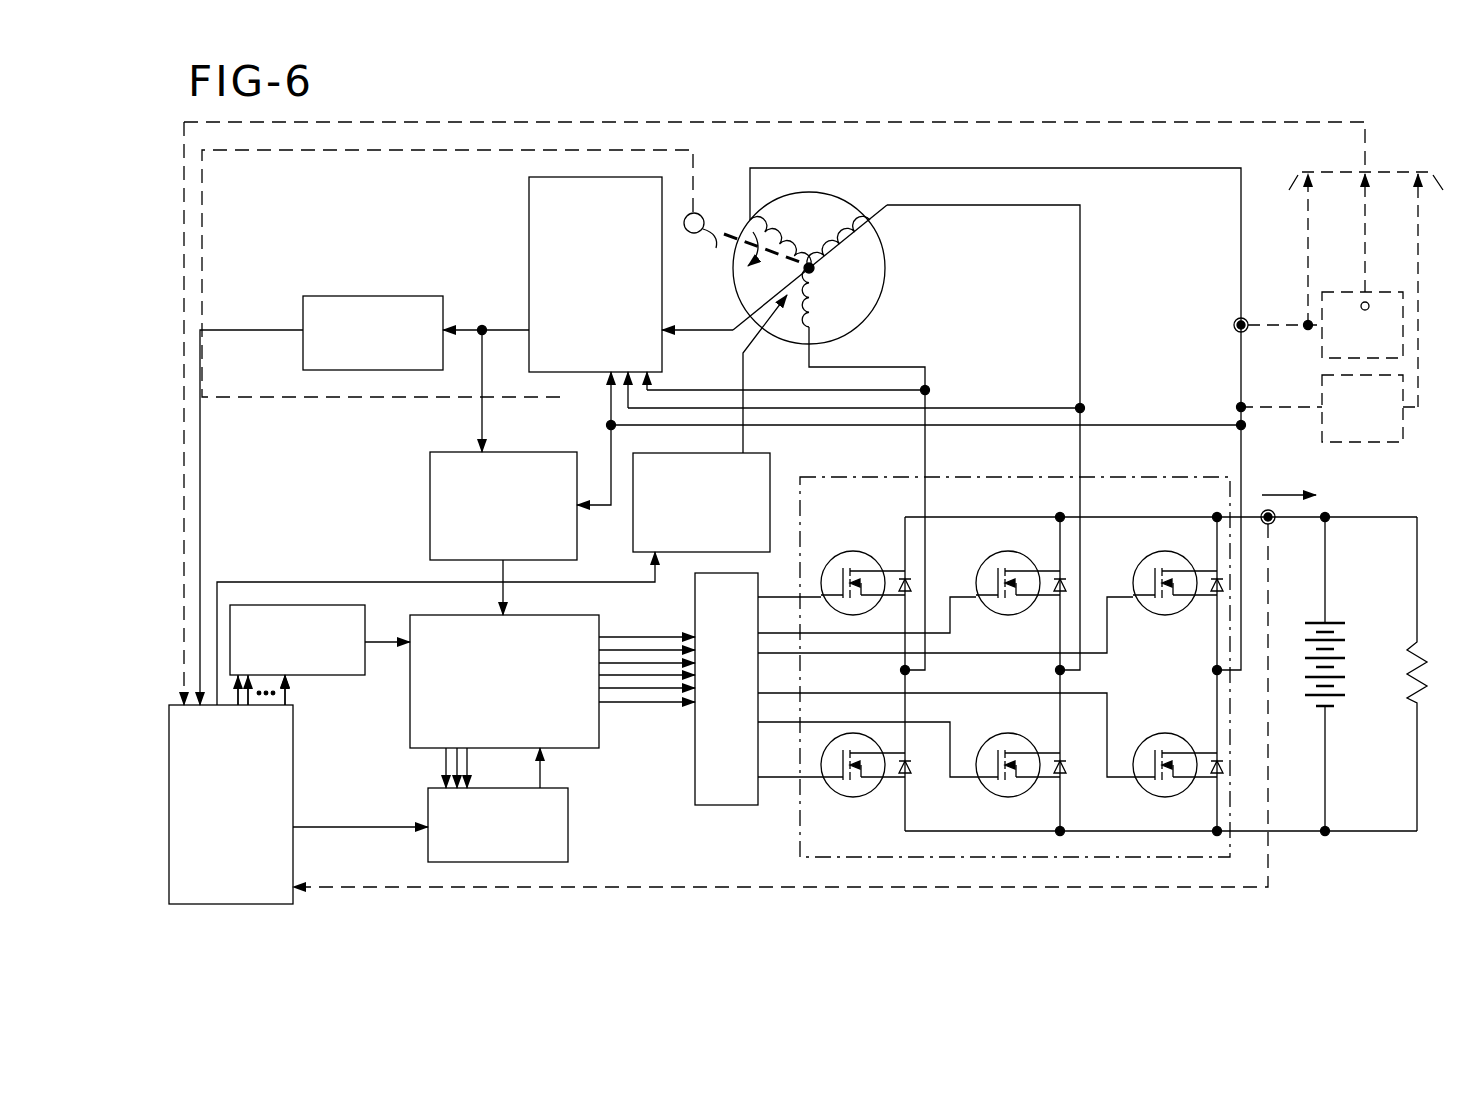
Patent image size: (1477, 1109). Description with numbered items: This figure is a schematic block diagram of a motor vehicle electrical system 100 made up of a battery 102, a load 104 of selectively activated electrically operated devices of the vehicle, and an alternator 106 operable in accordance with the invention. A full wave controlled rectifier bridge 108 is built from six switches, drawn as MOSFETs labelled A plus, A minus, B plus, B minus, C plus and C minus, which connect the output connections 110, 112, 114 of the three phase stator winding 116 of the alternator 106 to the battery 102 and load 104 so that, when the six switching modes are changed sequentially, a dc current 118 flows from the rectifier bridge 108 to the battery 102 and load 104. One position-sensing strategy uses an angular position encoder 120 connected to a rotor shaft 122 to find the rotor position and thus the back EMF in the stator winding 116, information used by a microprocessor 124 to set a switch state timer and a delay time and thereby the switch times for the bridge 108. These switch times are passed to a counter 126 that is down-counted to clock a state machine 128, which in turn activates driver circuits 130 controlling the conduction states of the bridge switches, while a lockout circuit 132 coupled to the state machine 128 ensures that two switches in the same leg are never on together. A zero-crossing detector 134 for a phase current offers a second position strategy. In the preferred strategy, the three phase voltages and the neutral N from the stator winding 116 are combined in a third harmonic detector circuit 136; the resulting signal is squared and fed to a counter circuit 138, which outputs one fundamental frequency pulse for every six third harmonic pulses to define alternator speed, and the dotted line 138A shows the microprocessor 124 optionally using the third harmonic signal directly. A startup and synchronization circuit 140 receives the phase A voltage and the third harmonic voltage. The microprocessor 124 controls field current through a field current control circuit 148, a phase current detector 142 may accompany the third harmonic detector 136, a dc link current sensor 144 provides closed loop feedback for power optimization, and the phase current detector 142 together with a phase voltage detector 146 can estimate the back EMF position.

The motor vehicle electrical system 100 is at (1380, 926).
The battery 102 is at (1338, 623).
The load 104 is at (1438, 635).
The alternator 106 is at (1052, 905).
The full wave controlled rectifier bridge 108 is at (893, 476).
The output connection 110 is at (1241, 452).
The output connection 112 is at (1080, 369).
The output connection 114 is at (900, 352).
The three phase stator winding 116 is at (897, 275).
The dc current 118 is at (1283, 490).
The angular position encoder 120 is at (694, 213).
The rotor shaft 122 is at (716, 248).
The microprocessor 124 is at (247, 905).
The counter 126 is at (326, 681).
The state machine 128 is at (410, 720).
The driver circuits 130 is at (725, 806).
The lockout circuit 132 is at (568, 833).
The zero-crossing detector 134 is at (1346, 290).
The third harmonic detector circuit 136 is at (529, 216).
The counter circuit 138 is at (352, 296).
The dotted line 138A is at (346, 400).
The startup and synchronization circuit 140 is at (430, 478).
The phase current detector 142 is at (1234, 323).
The dc link current sensor 144 is at (1273, 523).
The phase voltage detector 146 is at (1405, 425).
The field current control circuit 148 is at (683, 553).